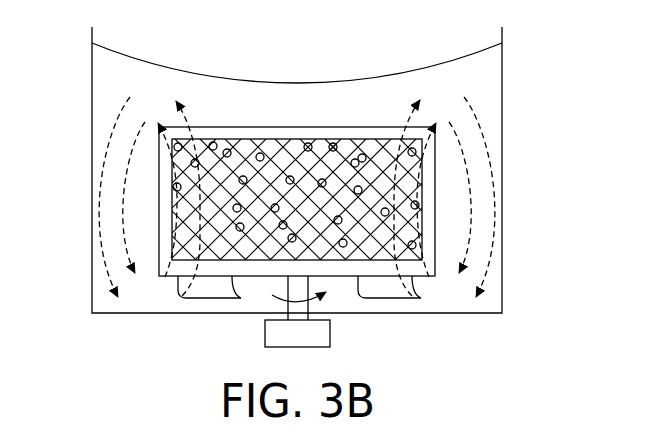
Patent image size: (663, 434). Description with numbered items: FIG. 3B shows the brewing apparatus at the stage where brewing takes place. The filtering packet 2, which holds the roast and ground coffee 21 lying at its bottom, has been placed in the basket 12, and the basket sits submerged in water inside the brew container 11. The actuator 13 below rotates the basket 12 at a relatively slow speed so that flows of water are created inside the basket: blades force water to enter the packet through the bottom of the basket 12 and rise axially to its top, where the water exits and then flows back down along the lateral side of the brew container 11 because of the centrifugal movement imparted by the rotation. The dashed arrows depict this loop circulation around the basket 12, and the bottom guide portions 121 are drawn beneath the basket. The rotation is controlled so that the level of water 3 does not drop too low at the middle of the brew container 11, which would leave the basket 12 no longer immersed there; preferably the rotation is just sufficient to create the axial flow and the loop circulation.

The filtering packet 2 is at (305, 224).
The level of water 3 is at (298, 83).
The brew container 11 is at (502, 108).
The basket 12 is at (435, 198).
The actuator 13 is at (272, 338).
The roast and ground coffee 21 is at (332, 143).
The guide portion 121 is at (403, 299).